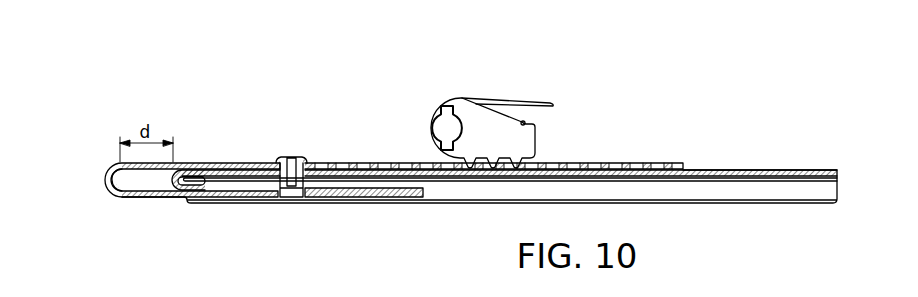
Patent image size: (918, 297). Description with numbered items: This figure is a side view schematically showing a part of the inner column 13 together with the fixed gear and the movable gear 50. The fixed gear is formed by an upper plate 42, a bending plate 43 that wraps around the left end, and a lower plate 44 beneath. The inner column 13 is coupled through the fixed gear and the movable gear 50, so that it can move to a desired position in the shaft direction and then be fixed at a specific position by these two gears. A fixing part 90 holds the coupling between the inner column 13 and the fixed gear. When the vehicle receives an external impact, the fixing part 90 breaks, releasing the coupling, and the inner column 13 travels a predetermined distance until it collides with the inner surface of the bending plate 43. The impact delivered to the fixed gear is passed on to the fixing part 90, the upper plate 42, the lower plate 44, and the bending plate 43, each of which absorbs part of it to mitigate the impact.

The inner column 13 is at (201, 162).
The upper plate 42 is at (246, 162).
The bending plate 43 is at (112, 180).
The lower plate 44 is at (342, 197).
The movable gear 50 is at (487, 78).
The fixing part 90 is at (302, 157).